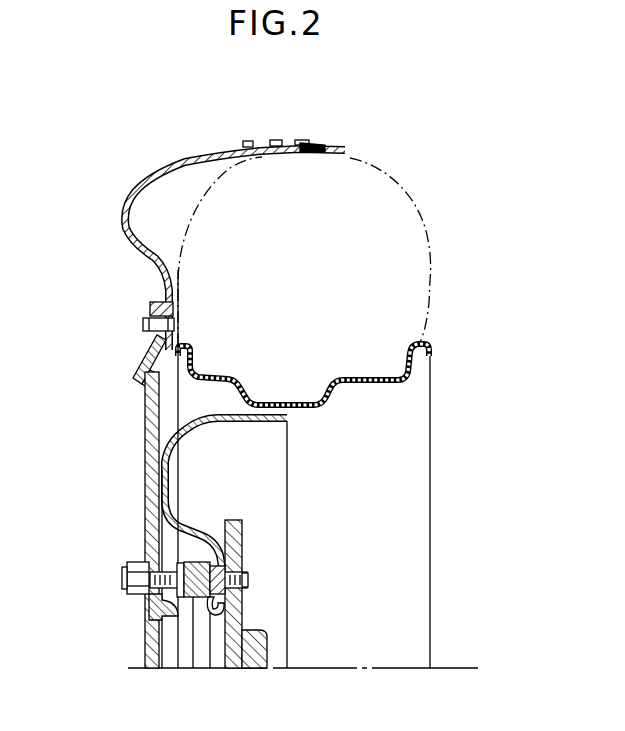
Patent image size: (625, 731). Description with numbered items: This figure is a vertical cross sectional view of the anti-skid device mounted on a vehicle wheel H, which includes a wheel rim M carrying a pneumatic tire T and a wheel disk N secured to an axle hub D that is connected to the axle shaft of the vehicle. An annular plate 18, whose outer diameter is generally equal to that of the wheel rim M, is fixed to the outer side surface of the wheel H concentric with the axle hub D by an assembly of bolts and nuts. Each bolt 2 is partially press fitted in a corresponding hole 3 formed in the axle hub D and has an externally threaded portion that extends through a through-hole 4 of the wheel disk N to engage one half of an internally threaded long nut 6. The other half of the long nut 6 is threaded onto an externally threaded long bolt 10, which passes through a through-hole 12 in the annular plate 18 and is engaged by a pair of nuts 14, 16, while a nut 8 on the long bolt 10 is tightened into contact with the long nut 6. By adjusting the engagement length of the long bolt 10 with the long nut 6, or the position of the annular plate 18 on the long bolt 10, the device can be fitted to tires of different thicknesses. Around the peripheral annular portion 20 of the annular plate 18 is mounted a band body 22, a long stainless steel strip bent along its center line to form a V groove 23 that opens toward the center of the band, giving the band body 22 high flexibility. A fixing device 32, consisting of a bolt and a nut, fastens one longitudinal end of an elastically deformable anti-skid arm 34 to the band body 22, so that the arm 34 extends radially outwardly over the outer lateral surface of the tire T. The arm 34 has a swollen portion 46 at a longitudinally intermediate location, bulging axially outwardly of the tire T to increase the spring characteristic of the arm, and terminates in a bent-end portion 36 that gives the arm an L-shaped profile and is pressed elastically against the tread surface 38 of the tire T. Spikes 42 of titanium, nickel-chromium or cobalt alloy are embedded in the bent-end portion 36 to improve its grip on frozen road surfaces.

The bolt 2 is at (212, 580).
The hole 3 is at (246, 578).
The through-hole 4 is at (213, 621).
The long nut 6 is at (193, 598).
The nut 8 is at (182, 598).
The long bolt 10 is at (162, 615).
The through-hole 12 is at (128, 586).
The nut 14 is at (158, 554).
The nut 16 is at (127, 567).
The annular plate 18 is at (150, 462).
The peripheral annular portion 20 is at (147, 398).
The band body 22 is at (141, 355).
The V groove 23 is at (145, 385).
The fixing device 32 is at (110, 375).
The anti-skid arm 34 is at (181, 244).
The bent-end portion 36 is at (246, 145).
The tread surface 38 is at (350, 158).
The spike 42 is at (280, 144).
The swollen portion 46 is at (127, 180).
The pneumatic tire T is at (432, 232).
The wheel rim M is at (190, 360).
The wheel disk N is at (186, 445).
The vehicle wheel H is at (470, 437).
The axle hub D is at (234, 538).